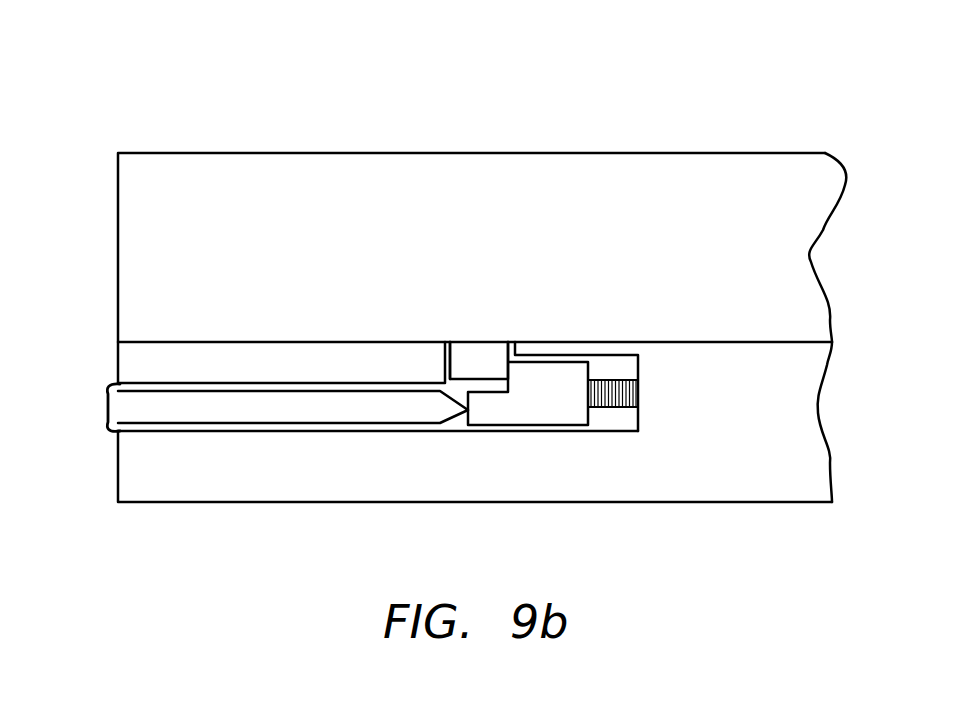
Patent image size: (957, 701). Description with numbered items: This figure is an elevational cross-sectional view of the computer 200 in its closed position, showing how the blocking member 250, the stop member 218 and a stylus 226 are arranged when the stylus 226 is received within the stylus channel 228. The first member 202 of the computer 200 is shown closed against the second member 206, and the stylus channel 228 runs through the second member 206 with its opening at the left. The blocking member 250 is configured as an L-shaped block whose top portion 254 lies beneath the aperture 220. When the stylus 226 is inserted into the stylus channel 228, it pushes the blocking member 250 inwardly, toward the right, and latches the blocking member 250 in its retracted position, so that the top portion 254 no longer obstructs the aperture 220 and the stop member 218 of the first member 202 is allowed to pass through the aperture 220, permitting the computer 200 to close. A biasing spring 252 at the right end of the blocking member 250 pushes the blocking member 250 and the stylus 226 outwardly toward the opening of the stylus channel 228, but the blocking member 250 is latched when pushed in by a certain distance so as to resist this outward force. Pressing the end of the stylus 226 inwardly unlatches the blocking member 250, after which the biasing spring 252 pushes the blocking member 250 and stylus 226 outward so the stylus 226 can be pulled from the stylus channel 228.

The computer 200 is at (630, 81).
The first member 202 is at (307, 172).
The second member 206 is at (202, 503).
The stop member 218 is at (472, 353).
The aperture 220 is at (447, 350).
The stylus 226 is at (120, 410).
The stylus channel 228 is at (157, 428).
The blocking member 250 is at (540, 417).
The biasing spring 252 is at (604, 407).
The top portion 254 is at (553, 365).